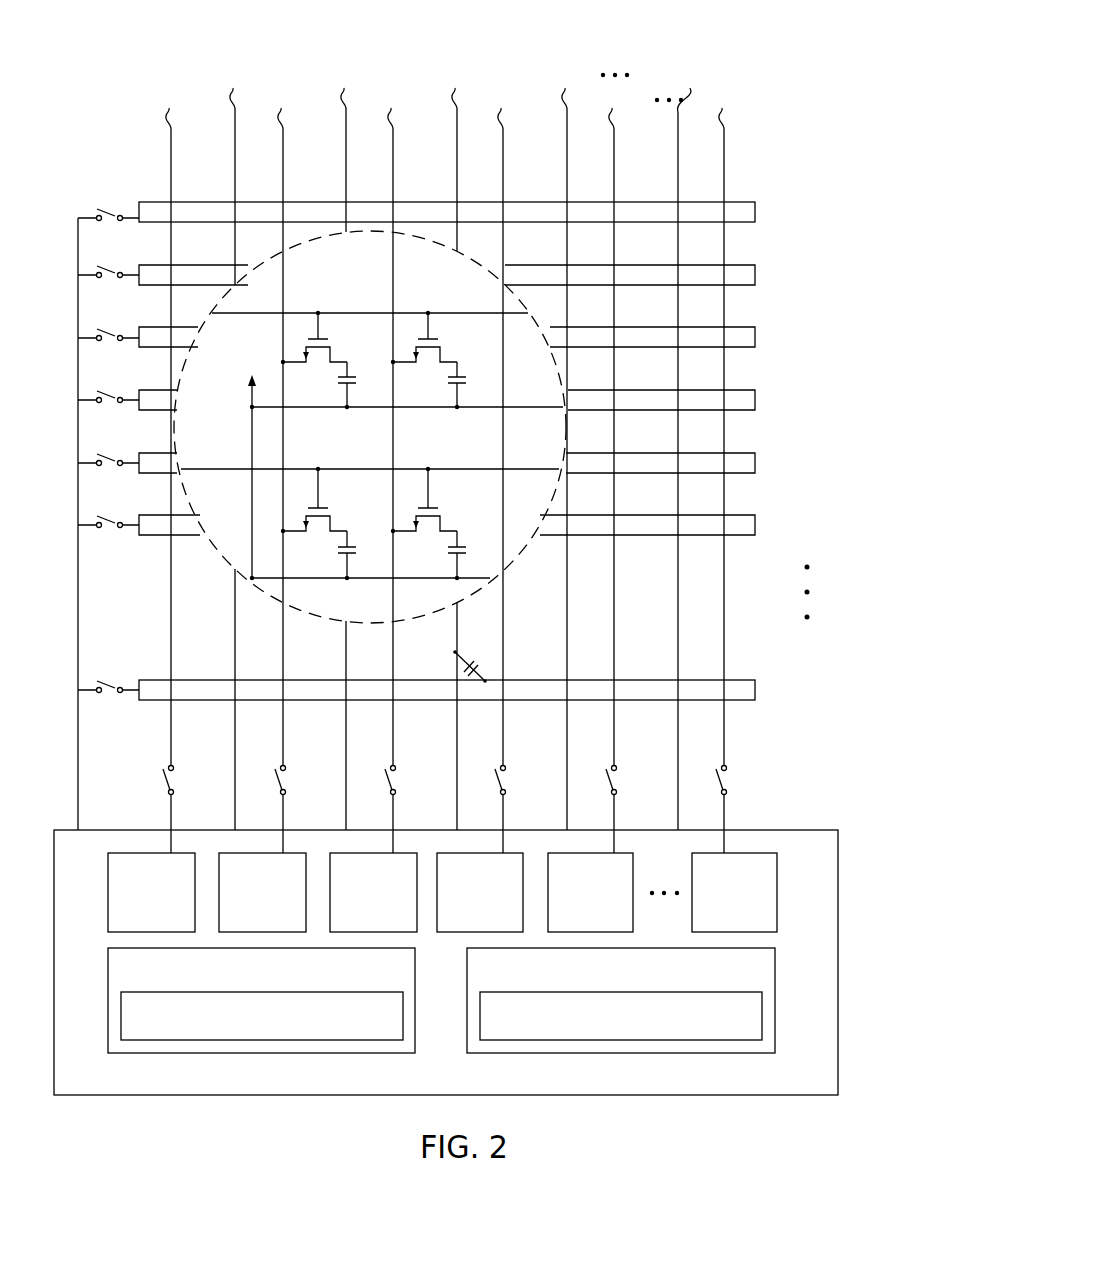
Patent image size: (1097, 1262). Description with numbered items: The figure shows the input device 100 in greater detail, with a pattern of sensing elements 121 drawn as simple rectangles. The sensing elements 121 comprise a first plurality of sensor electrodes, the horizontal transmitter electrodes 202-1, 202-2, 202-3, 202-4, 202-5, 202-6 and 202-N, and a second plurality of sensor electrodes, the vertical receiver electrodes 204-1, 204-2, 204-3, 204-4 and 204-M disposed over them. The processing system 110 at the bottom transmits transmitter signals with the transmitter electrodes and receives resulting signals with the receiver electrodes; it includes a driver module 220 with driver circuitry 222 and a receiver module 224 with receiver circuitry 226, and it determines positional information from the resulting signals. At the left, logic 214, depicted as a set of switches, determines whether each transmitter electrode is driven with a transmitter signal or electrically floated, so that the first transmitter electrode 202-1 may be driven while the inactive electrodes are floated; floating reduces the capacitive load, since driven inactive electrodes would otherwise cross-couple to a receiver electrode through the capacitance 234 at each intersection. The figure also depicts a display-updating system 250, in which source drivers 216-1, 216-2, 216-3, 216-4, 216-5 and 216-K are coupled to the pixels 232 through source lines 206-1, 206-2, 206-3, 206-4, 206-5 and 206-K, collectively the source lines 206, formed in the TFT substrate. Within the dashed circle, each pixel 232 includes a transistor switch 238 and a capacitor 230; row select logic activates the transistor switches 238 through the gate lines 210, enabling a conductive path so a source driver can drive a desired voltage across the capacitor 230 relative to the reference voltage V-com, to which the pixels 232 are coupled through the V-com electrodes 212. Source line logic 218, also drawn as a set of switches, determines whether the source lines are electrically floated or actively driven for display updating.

The input device 100 is at (674, 50).
The sensing elements 121 is at (753, 144).
The logic 214 is at (108, 203).
The transmitter electrode 202-1 is at (755, 212).
The transmitter electrode 202-2 is at (755, 275).
The transmitter electrode 202-3 is at (755, 337).
The transmitter electrode 202-4 is at (755, 400).
The transmitter electrode 202-5 is at (755, 463).
The transmitter electrode 202-6 is at (755, 525).
The transmitter electrode 202-N is at (755, 690).
The receiver electrode 204-1 is at (235, 447).
The receiver electrode 204-2 is at (346, 447).
The receiver electrode 204-3 is at (457, 447).
The receiver electrode 204-4 is at (567, 447).
The receiver electrode 204-M is at (678, 447).
The source line 206-1 is at (177, 471).
The source line 206-2 is at (289, 471).
The source line 206-3 is at (399, 471).
The source line 206-4 is at (509, 471).
The source line 206-5 is at (620, 471).
The source line 206-K is at (732, 471).
The source lines 206 is at (285, 266).
The gate lines 210 is at (405, 312).
The V-com electrodes 212 is at (510, 408).
The source line logic 218 is at (743, 792).
The capacitor 230 is at (343, 381).
The pixel 232 is at (341, 353).
The capacitance 234 is at (480, 672).
The transistor switch 238 is at (325, 330).
The system 250 is at (231, 530).
The source driver 216-1 is at (151, 892).
The source driver 216-2 is at (262, 892).
The source driver 216-3 is at (373, 892).
The source driver 216-4 is at (480, 892).
The source driver 216-5 is at (590, 892).
The source driver 216-K is at (734, 892).
The driver module 220 is at (403, 981).
The driver circuitry 222 is at (390, 1028).
The receiver module 224 is at (762, 981).
The receiver circuitry 226 is at (750, 1028).
The processing system 110 is at (340, 1086).